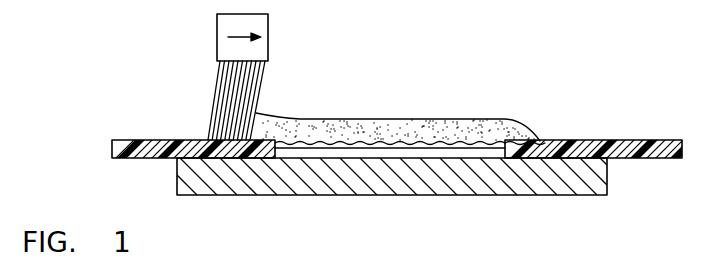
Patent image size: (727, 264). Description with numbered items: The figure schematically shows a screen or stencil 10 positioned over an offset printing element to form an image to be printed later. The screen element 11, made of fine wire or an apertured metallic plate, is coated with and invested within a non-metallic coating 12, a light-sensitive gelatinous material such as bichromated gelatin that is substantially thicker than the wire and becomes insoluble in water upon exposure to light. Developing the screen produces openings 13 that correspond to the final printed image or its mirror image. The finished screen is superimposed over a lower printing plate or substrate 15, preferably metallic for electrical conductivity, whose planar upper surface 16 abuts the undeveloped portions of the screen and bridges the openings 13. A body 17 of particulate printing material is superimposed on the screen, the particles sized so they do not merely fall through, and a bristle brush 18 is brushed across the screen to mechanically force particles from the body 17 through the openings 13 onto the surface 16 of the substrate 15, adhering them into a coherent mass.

The screen or stencil 10 is at (136, 134).
The screen element 11 is at (335, 143).
The non-metallic coating 12 is at (119, 159).
The openings 13 is at (280, 145).
The substrate 15 is at (588, 201).
The upper surface 16 is at (478, 153).
The body of particles 17 is at (428, 130).
The bristle brush 18 is at (270, 26).